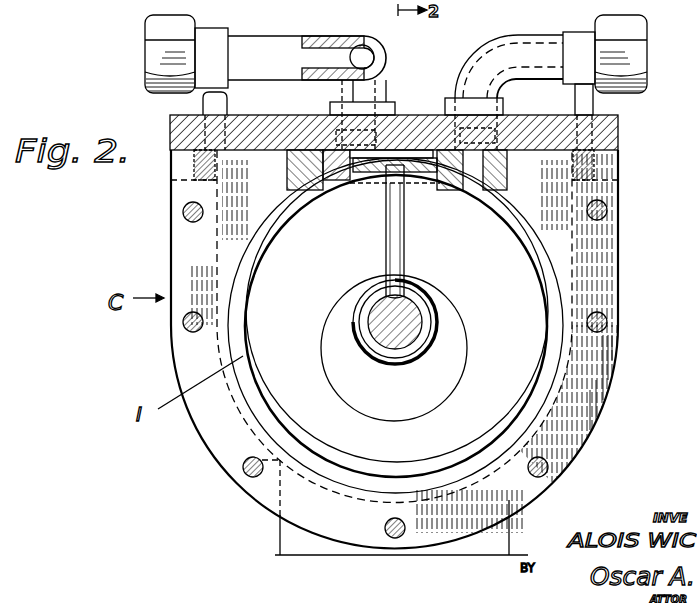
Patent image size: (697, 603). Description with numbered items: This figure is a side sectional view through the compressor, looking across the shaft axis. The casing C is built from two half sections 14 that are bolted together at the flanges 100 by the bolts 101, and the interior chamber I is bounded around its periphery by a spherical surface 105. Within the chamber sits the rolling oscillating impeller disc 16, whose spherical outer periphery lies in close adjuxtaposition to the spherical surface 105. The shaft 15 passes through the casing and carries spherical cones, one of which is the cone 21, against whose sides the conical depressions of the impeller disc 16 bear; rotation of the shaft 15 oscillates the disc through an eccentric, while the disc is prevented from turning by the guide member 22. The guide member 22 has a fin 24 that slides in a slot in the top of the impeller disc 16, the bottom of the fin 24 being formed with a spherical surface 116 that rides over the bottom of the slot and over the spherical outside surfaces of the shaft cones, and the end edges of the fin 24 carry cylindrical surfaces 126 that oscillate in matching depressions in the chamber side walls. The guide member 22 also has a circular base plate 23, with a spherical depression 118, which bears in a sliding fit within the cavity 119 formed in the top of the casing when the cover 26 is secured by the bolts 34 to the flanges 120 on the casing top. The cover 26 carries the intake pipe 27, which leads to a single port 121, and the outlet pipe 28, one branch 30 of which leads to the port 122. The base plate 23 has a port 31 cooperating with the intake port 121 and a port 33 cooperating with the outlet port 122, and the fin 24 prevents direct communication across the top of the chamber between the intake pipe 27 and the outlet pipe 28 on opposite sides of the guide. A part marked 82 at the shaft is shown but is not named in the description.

The half section 14 is at (609, 273).
The shaft 15 is at (412, 318).
The impeller disc 16 is at (598, 389).
The spherical cone 21 is at (451, 340).
The guide member 22 is at (405, 172).
The circular base plate 23 is at (309, 205).
The fin 24 is at (405, 264).
The cover 26 is at (612, 136).
The intake pipe 27 is at (516, 44).
The outlet pipe 28 is at (270, 48).
The branch 30 is at (378, 91).
The port 31 is at (486, 170).
The port 33 is at (287, 185).
The bolt 34 is at (190, 104).
The bearing ring 82 is at (384, 350).
The flange 100 is at (212, 426).
The bolt 101 is at (187, 333).
The peripheral spherical surface 105 is at (362, 485).
The spherical surface 116 is at (389, 290).
The depression of spherical contour 118 is at (468, 126).
The cavity 119 is at (287, 172).
The flange 120 is at (180, 169).
The port 121 is at (503, 116).
The port 122 is at (356, 136).
The cylindrical surface 126 is at (388, 215).